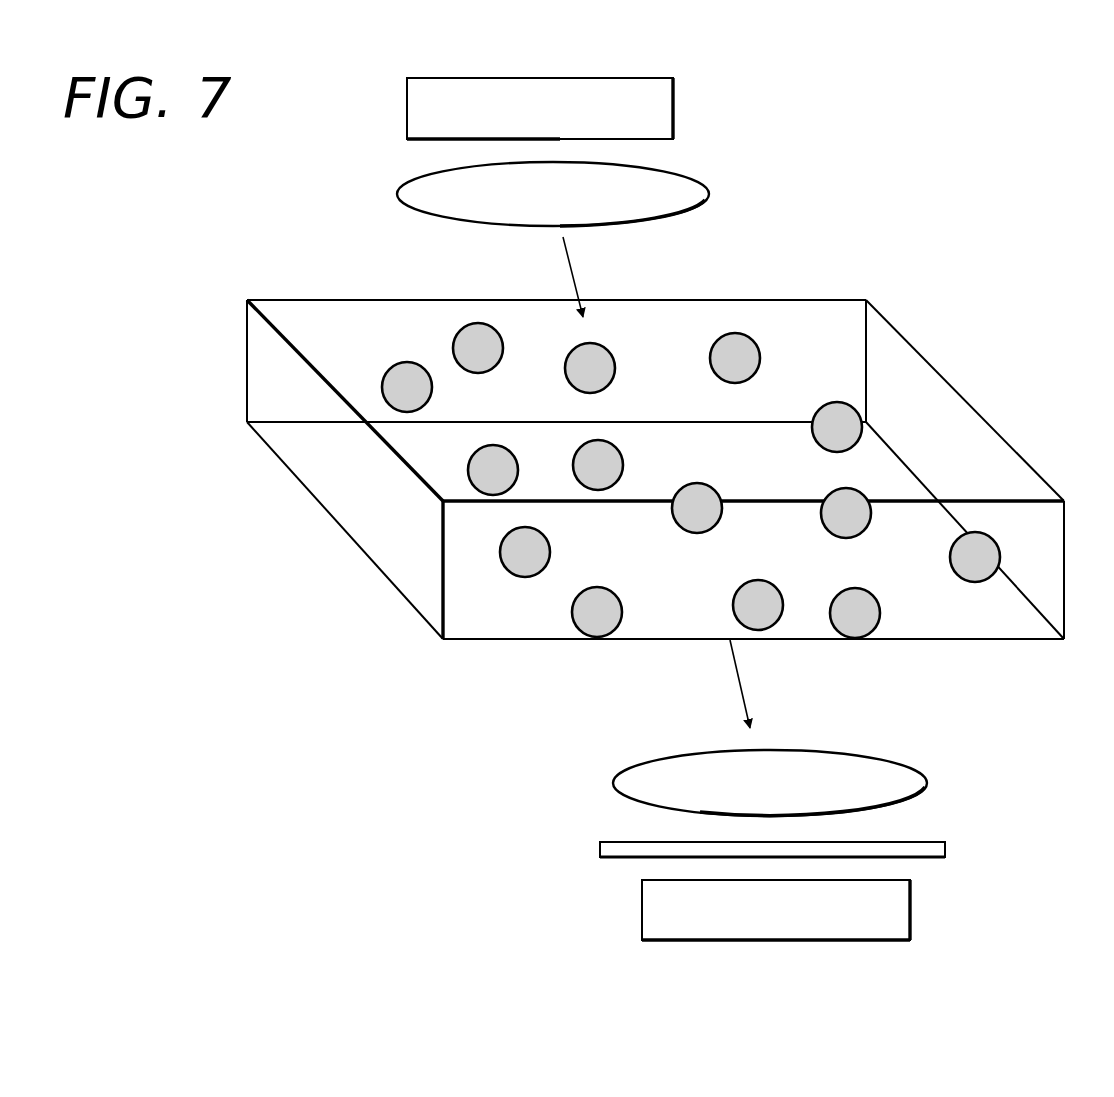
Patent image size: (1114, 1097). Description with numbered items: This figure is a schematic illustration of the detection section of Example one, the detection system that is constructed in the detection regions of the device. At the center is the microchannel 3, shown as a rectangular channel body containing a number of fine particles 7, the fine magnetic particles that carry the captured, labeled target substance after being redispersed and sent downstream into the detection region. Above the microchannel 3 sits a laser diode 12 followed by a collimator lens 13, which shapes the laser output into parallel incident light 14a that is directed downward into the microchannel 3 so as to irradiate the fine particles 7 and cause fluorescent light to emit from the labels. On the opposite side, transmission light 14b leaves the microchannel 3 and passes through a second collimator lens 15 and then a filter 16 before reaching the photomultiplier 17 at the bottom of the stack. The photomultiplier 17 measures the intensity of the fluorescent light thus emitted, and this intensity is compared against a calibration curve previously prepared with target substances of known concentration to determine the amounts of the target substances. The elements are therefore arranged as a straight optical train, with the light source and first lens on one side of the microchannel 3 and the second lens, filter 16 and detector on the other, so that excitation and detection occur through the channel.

The microchannel 3 is at (893, 346).
The fine particles 7 is at (593, 630).
The laser diode 12 is at (420, 112).
The collimator lens 13 is at (672, 187).
The parallel incident light 14a is at (575, 278).
The transmission light 14b is at (738, 683).
The collimator lens 15 is at (873, 772).
The filter 16 is at (930, 845).
The photomultiplier 17 is at (895, 905).